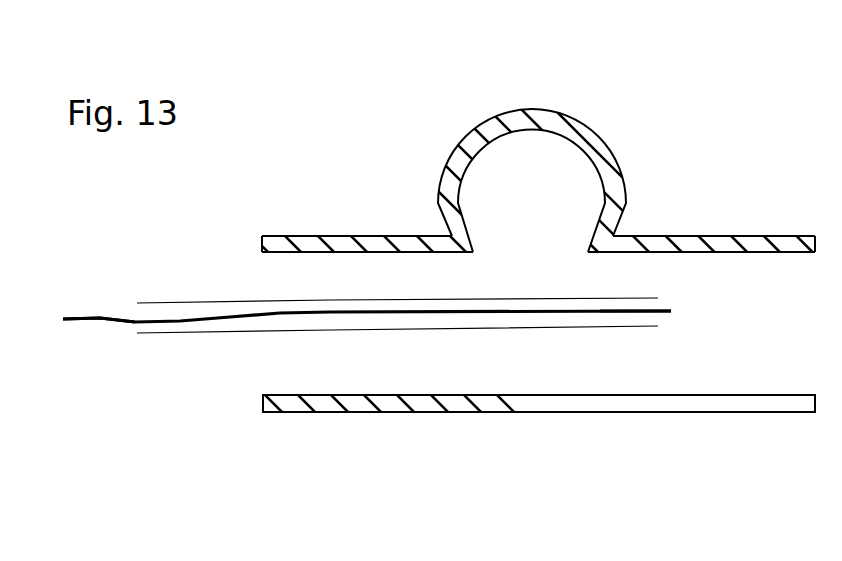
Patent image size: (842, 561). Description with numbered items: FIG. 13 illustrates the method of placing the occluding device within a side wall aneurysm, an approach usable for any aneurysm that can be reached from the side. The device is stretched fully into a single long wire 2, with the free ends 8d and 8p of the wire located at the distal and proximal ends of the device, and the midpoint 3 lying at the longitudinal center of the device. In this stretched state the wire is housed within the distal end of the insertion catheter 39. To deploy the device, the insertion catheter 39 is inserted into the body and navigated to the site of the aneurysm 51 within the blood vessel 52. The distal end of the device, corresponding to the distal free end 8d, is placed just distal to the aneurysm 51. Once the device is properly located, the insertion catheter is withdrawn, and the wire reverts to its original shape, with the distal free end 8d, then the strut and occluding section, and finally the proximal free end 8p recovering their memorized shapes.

The single long wire 2 is at (300, 323).
The midpoint 3 is at (420, 315).
The proximal free end 8p is at (77, 322).
The distal free end 8d is at (638, 315).
The insertion catheter 39 is at (380, 305).
The aneurysm 51 is at (476, 132).
The blood vessel 52 is at (310, 235).